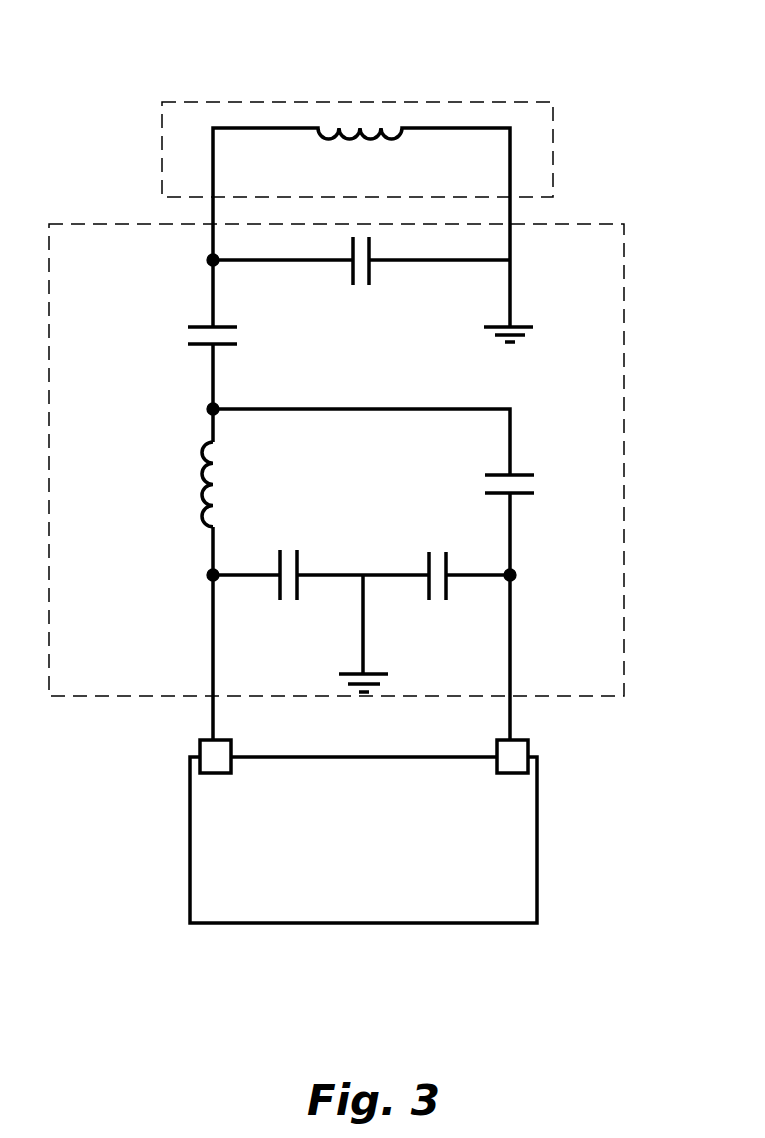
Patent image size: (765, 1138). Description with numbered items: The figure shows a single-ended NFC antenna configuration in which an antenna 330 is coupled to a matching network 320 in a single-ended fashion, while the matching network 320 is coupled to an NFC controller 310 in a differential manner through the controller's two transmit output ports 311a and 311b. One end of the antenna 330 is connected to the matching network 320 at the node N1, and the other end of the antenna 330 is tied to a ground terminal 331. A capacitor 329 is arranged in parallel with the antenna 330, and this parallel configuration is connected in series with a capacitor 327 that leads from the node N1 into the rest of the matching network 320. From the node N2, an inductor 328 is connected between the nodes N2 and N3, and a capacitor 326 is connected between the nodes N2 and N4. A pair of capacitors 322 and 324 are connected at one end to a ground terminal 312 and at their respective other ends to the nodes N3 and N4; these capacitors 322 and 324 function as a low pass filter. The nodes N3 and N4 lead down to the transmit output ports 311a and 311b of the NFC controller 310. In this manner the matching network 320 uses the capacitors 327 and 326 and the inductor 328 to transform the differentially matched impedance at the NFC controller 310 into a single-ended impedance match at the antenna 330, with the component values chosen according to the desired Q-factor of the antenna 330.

The antenna 330 is at (363, 97).
The matching network 320 is at (627, 553).
The capacitor 329 is at (373, 277).
The ground 331 is at (518, 323).
The capacitor 327 is at (207, 327).
The inductor 328 is at (207, 463).
The capacitor 326 is at (512, 470).
The capacitor 322 is at (302, 565).
The capacitor 324 is at (427, 557).
The ground terminal 312 is at (388, 677).
The NFC controller 310 is at (537, 853).
The transmit output port 311a is at (217, 750).
The transmit output port 311b is at (522, 750).
The node N1 is at (208, 258).
The node N2 is at (208, 409).
The node N3 is at (208, 575).
The node N4 is at (517, 575).